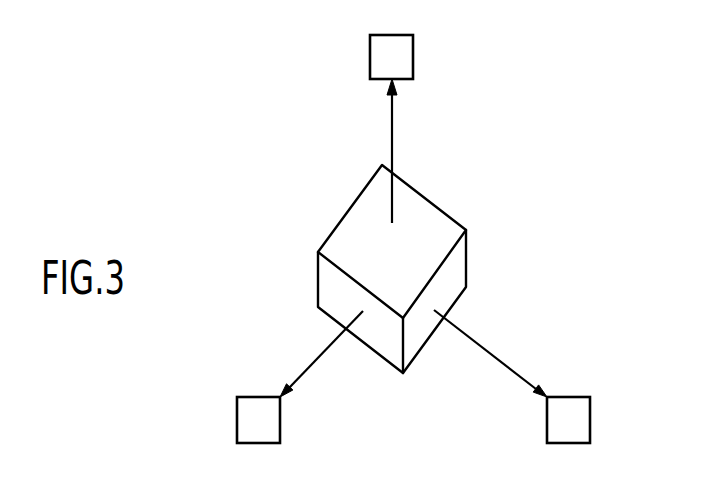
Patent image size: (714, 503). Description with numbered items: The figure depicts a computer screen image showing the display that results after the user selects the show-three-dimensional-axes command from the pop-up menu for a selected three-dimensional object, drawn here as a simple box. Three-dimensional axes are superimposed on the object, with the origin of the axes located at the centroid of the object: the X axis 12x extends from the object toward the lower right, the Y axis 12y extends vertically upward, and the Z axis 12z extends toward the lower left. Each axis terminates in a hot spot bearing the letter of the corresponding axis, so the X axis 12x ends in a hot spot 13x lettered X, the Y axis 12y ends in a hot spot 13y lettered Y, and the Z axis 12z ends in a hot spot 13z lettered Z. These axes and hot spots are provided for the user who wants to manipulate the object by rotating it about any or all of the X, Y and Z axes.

The X axis 12x is at (463, 331).
The Y axis 12y is at (393, 139).
The Z axis 12z is at (322, 352).
The hot spot 13x is at (590, 398).
The hot spot 13y is at (413, 62).
The hot spot 13z is at (280, 436).